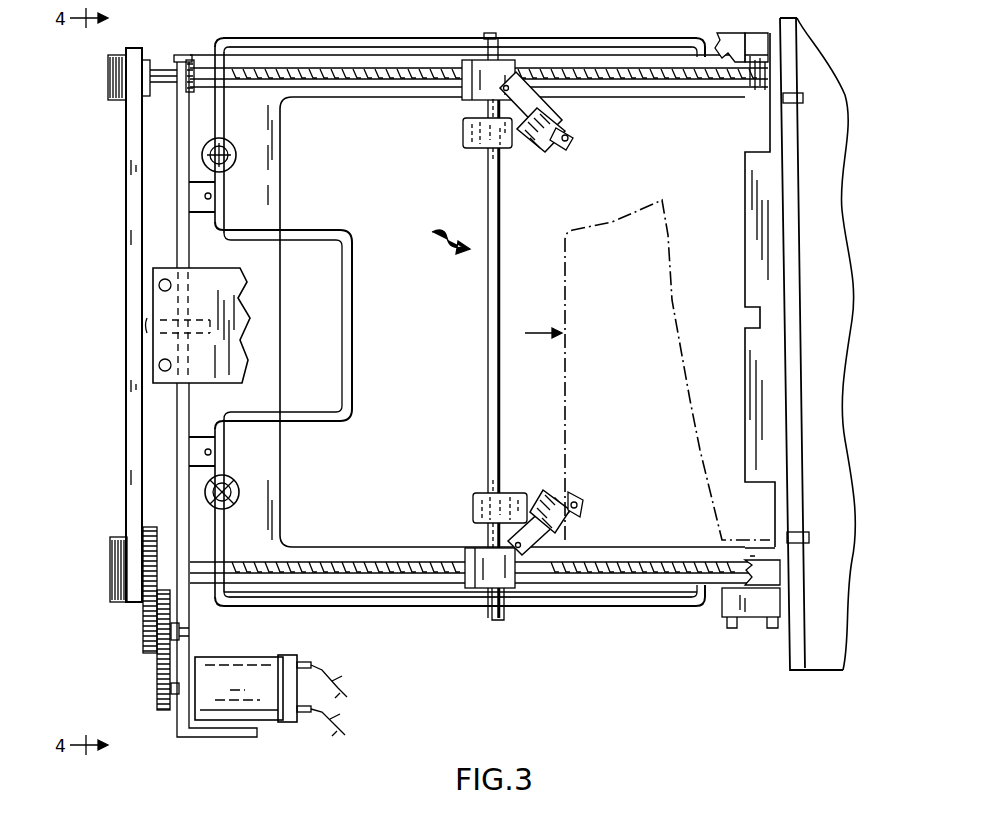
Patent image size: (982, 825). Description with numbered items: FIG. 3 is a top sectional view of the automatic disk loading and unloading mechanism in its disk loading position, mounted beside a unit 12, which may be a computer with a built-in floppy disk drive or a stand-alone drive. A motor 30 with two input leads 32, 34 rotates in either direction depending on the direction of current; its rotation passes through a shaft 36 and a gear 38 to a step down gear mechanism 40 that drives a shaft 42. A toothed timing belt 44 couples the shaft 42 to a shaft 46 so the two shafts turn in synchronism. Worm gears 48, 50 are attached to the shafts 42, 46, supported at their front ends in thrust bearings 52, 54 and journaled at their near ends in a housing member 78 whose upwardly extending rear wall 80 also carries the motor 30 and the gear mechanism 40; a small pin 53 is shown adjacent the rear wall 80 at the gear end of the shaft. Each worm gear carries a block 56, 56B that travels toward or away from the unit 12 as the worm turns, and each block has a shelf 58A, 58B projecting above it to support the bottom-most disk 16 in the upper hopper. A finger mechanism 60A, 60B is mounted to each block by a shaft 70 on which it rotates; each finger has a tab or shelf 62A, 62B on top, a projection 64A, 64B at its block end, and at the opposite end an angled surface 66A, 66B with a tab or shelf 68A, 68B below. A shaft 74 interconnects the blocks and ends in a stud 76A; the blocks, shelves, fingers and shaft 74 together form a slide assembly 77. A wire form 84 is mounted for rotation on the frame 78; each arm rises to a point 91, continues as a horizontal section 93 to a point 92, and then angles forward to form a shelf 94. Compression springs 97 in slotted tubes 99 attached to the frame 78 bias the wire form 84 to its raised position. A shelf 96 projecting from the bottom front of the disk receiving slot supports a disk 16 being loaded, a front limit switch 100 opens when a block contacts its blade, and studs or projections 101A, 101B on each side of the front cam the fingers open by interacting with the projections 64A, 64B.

The unit 12 is at (828, 660).
The disk 16 is at (565, 385).
The motor 30 is at (228, 722).
The input lead 32 is at (328, 675).
The input lead 34 is at (334, 718).
The shaft 36 is at (176, 698).
The gear 38 is at (156, 688).
The step down gear mechanism 40 is at (116, 641).
The shaft 42 is at (170, 552).
The toothed timing belt 44 is at (125, 453).
The shaft 46 is at (160, 68).
The worm gear 48 is at (384, 560).
The worm gear 50 is at (372, 88).
The thrust bearing 52 is at (762, 548).
The pin 53 is at (192, 603).
The thrust bearing 54 is at (755, 45).
The block 56 is at (512, 592).
The block 56B is at (512, 62).
The shelf 58A is at (482, 492).
The shelf 58B is at (475, 149).
The finger mechanism 60A is at (560, 495).
The finger mechanism 60B is at (558, 116).
The tab or shelf 62A is at (542, 490).
The tab or shelf 62B is at (540, 148).
The projection 64A is at (545, 592).
The projection 64B is at (520, 78).
The angled surface 66A is at (580, 498).
The angled surface 66B is at (570, 148).
The tab or shelf 68A is at (578, 508).
The tab or shelf 68B is at (568, 139).
The shaft 70 is at (503, 85).
The shaft 74 is at (487, 350).
The stud 76A is at (492, 612).
The slide assembly 77 is at (443, 230).
The housing member 78 is at (400, 607).
The rear wall 80 is at (190, 644).
The wire form 84 is at (612, 46).
The point 91 is at (217, 42).
The point 92 is at (225, 226).
The horizontal section 93 is at (217, 106).
The forward facing shelf 94 is at (353, 262).
The shelf 96 is at (745, 257).
The compression spring 97 is at (236, 160).
The slotted tube 99 is at (232, 150).
The front limit switch 100 is at (724, 610).
The stud or projection 101A is at (764, 574).
The stud or projection 101B is at (717, 44).